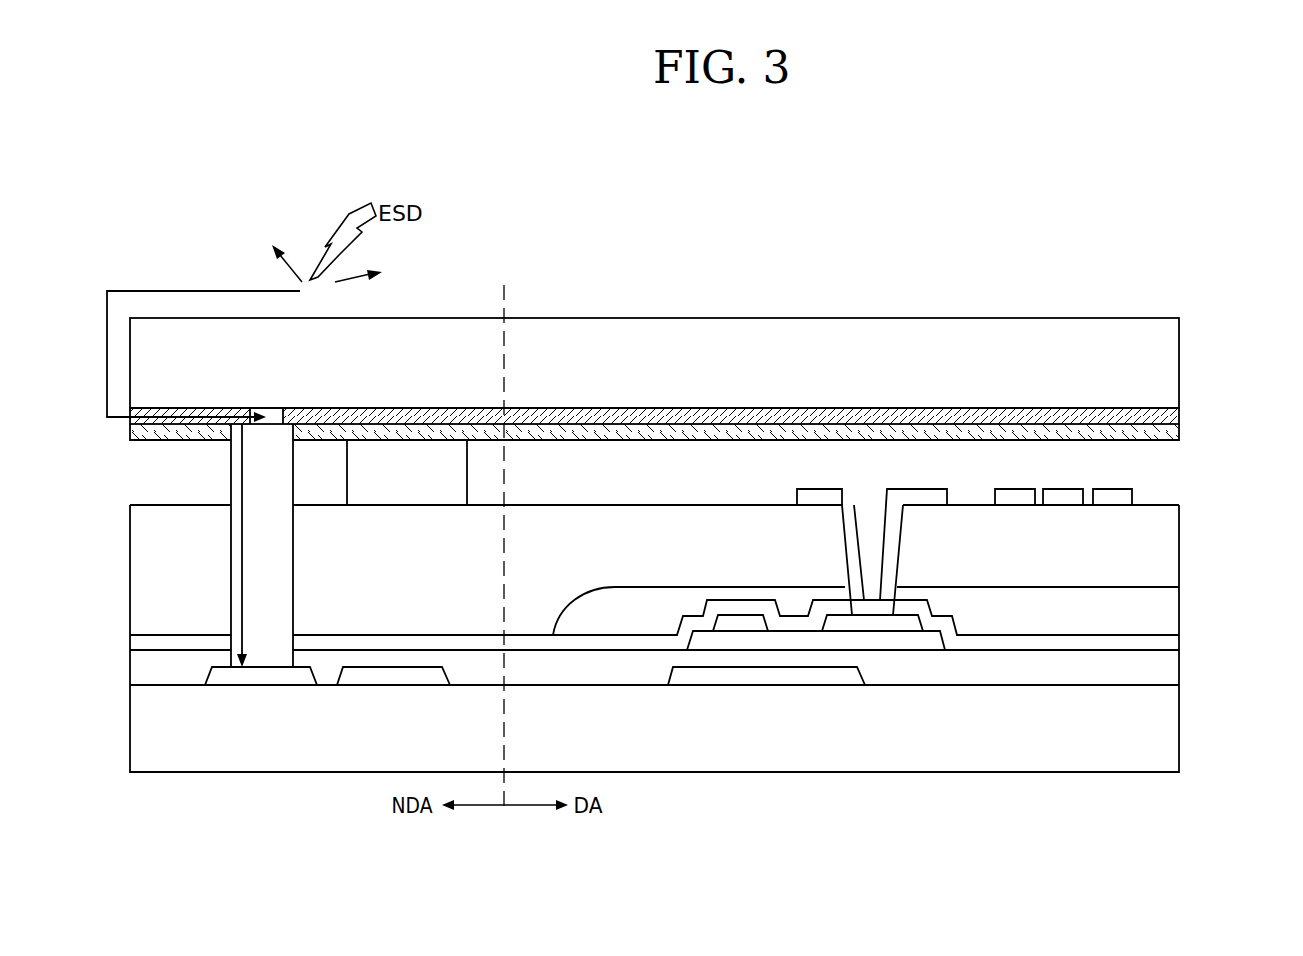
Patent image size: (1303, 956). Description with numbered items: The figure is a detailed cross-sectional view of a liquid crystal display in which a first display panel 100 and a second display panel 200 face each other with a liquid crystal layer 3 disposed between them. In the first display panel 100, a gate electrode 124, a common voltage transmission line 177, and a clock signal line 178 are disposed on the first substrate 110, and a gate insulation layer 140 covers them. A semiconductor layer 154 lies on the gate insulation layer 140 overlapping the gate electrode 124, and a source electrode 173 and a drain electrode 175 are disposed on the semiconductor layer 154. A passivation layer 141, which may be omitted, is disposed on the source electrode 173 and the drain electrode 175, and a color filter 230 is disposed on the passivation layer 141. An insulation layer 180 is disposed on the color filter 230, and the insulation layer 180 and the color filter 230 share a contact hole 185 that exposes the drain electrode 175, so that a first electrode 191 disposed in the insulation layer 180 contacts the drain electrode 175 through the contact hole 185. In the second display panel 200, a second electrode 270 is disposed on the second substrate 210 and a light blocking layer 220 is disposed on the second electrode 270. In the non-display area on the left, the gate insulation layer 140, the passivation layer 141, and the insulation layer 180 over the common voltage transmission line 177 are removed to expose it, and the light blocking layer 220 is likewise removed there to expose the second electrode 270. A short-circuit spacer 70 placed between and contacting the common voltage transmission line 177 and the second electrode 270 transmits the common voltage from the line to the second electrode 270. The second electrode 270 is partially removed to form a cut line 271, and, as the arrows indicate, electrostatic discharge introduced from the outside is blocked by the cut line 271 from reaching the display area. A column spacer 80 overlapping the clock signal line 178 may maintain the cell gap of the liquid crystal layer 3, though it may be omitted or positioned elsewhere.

The liquid crystal layer 3 is at (1153, 470).
The short-circuit spacer 70 is at (229, 477).
The column spacer 80 is at (450, 478).
The first display panel 100 is at (713, 544).
The first substrate 110 is at (1153, 722).
The gate electrode 124 is at (807, 675).
The gate insulation layer 140 is at (1153, 667).
The passivation layer 141 is at (1153, 643).
The semiconductor layer 154 is at (935, 643).
The source electrode 173 is at (745, 623).
The drain electrode 175 is at (880, 623).
The common voltage transmission line 177 is at (259, 678).
The clock signal line 178 is at (380, 678).
The insulation layer 180 is at (1153, 548).
The contact hole 185 is at (867, 596).
The first electrode 191 is at (920, 498).
The second display panel 200 is at (713, 338).
The second substrate 210 is at (1153, 353).
The light blocking layer 220 is at (684, 437).
The color filter 230 is at (1153, 605).
The second electrode 270 is at (1155, 414).
The cut line 271 is at (272, 410).